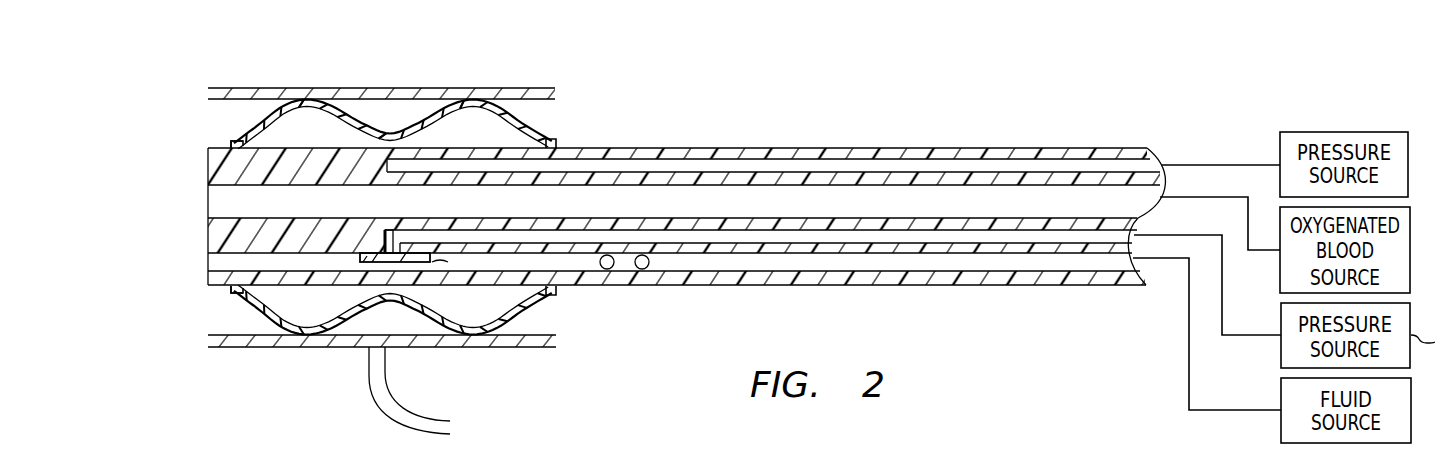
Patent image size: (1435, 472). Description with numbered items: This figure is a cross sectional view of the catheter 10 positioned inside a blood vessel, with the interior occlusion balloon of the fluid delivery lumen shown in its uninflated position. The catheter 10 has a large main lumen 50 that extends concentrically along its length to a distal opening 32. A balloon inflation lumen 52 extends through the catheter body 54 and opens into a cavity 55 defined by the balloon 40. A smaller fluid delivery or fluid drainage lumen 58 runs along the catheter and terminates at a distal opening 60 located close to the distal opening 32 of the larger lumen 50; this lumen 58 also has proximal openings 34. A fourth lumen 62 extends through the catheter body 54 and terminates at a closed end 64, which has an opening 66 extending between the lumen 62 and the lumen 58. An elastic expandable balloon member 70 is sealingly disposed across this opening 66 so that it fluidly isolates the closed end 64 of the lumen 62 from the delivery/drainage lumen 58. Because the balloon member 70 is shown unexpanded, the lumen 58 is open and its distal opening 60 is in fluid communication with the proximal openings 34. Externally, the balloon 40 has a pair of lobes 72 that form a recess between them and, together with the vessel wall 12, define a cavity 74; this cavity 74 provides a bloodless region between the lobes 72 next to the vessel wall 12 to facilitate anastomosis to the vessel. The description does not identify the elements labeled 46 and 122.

The catheter 10 is at (634, 93).
The vessel wall 12 is at (545, 87).
The distal opening 32 is at (208, 202).
The proximal openings 34 is at (607, 270).
The balloon 40 is at (258, 122).
The balloon attachment 46 is at (230, 146).
The main lumen 50 is at (902, 193).
The balloon inflation lumen 52 is at (758, 163).
The catheter body 54 is at (686, 147).
The cavity 55 is at (323, 141).
The fluid delivery or fluid drainage lumen 58 is at (758, 262).
The distal opening 60 is at (208, 268).
The fourth lumen 62 is at (853, 253).
The closed end 64 is at (370, 252).
The opening 66 is at (392, 250).
The expandable balloon member 70 is at (430, 263).
The lobes 72 is at (305, 97).
The cavity 74 is at (378, 105).
The distal tube 122 is at (420, 413).